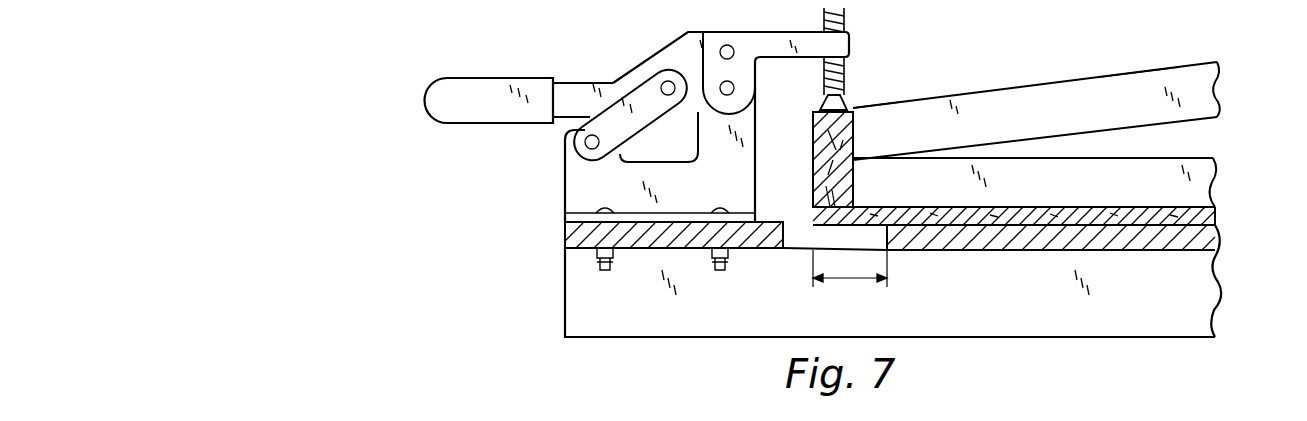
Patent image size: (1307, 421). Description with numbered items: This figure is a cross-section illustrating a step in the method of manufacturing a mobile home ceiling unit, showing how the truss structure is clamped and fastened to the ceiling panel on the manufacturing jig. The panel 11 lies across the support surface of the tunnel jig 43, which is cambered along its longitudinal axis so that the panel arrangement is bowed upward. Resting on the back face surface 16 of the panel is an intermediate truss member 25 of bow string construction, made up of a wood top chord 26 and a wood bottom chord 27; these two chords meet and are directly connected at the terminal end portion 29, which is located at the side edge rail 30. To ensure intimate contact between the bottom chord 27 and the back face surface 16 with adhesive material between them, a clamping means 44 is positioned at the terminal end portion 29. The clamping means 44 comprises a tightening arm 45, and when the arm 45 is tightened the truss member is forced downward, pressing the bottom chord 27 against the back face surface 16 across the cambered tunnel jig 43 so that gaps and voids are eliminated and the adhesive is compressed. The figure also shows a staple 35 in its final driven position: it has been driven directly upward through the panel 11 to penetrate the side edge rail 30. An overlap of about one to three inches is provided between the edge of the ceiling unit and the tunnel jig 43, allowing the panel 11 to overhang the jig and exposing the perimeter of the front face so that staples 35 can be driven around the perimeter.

The panel 11 is at (1213, 214).
The back face surface 16 is at (1193, 205).
The intermediate truss member 25 is at (1139, 72).
The top chord 26 is at (1100, 112).
The bottom chord 27 is at (1107, 187).
The terminal end portion 29 is at (860, 108).
The side edge rail 30 is at (850, 112).
The staple 35 is at (824, 203).
The tunnel jig 43 is at (566, 234).
The clamping means 44 is at (620, 52).
The tightening arm 45 is at (486, 113).